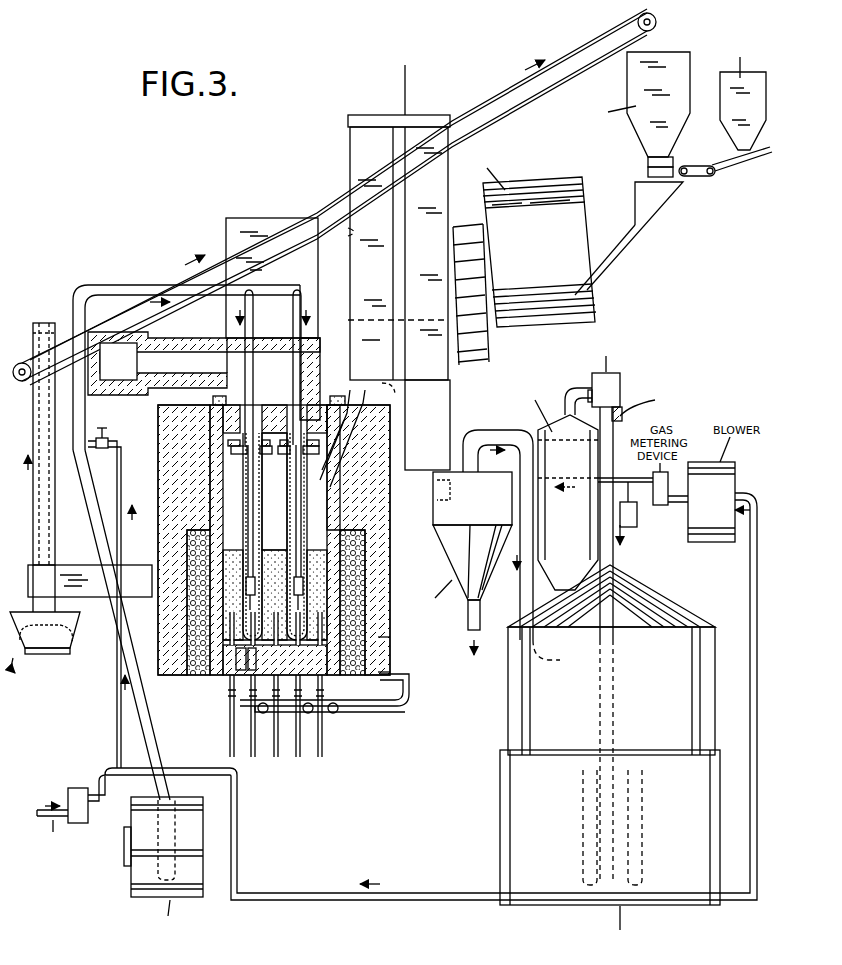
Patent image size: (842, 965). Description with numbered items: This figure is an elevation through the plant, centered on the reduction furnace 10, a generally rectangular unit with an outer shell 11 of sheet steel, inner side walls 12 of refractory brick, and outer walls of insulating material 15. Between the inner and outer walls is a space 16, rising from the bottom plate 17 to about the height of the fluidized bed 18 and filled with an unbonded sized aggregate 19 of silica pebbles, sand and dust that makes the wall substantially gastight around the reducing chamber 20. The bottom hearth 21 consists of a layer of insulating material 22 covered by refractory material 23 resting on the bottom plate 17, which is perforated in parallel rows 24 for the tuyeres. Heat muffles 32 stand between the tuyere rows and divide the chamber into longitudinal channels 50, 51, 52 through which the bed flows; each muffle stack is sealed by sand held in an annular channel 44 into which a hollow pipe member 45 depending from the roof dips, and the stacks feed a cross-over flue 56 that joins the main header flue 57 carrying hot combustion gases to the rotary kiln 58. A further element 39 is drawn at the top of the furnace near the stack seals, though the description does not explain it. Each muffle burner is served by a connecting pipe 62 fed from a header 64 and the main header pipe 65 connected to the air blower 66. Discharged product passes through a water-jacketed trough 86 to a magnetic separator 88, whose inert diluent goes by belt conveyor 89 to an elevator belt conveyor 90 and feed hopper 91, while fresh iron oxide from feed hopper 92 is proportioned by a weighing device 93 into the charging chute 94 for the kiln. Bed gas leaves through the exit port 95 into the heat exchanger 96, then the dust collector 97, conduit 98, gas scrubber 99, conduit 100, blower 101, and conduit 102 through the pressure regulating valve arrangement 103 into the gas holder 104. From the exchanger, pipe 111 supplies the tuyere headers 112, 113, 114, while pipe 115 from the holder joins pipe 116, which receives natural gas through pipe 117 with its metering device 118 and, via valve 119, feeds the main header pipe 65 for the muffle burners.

The reduction furnace 10 is at (285, 528).
The outer shell 11 is at (160, 485).
The inner side walls 12 is at (335, 495).
The insulating material 15 is at (385, 672).
The space 16 is at (186, 622).
The bottom plate 17 is at (200, 676).
The fluidized bed 18 is at (273, 550).
The aggregate 19 is at (376, 637).
The furnace reducing chamber 20 is at (280, 496).
The bottom hearth 21 is at (310, 660).
The insulating material layer 22 is at (286, 700).
The refractory material 23 is at (232, 680).
The parallel rows 24 is at (276, 627).
The heat muffles 32 is at (243, 560).
The gas outlet 39 is at (212, 400).
The annular channel 44 is at (231, 450).
The hollow pipe member 45 is at (228, 442).
The longitudinal channel 50 is at (200, 548).
The longitudinal channel 51 is at (300, 540).
The longitudinal channel 52 is at (339, 444).
The cross-over flue 56 is at (176, 351).
The main header flue 57 is at (113, 357).
The rotary kiln 58 is at (552, 185).
The connecting pipe 62 is at (290, 313).
The header 64 is at (143, 286).
The main header pipe 65 is at (88, 521).
The air blower 66 is at (131, 885).
The water-jacketed trough 86 is at (92, 600).
The magnetic separator 88 is at (70, 645).
The belt conveyor 89 is at (50, 548).
The elevator belt conveyor 90 is at (320, 196).
The feed hopper 91 is at (632, 86).
The feed hopper 92 is at (720, 80).
The weighing device 93 is at (680, 160).
The charging chute 94 is at (660, 207).
The bed gas exit port 95 is at (340, 470).
The heat exchanger 96 is at (362, 138).
The dust collector 97 is at (462, 572).
The conduit 98 is at (498, 432).
The gas scrubber 99 is at (577, 544).
The conduit 100 is at (570, 395).
The blower 101 is at (596, 373).
The conduit 102 is at (615, 537).
The pressure regulating valve arrangement 103 is at (620, 400).
The gas holder 104 is at (500, 812).
The pipe 111 is at (390, 714).
The header 112 is at (263, 714).
The header 113 is at (308, 714).
The header 114 is at (333, 714).
The pipe 115 is at (372, 893).
The pipe 116 is at (117, 738).
The pipe 117 is at (38, 808).
The metering device 118 is at (78, 788).
The valve 119 is at (104, 427).